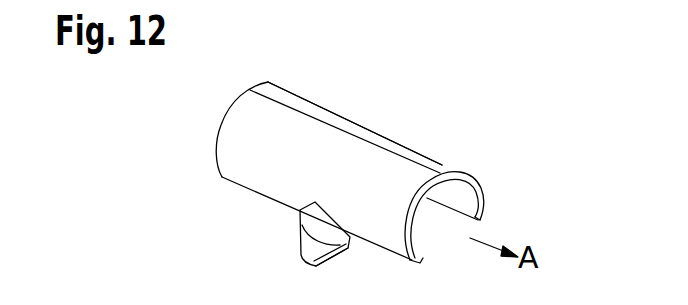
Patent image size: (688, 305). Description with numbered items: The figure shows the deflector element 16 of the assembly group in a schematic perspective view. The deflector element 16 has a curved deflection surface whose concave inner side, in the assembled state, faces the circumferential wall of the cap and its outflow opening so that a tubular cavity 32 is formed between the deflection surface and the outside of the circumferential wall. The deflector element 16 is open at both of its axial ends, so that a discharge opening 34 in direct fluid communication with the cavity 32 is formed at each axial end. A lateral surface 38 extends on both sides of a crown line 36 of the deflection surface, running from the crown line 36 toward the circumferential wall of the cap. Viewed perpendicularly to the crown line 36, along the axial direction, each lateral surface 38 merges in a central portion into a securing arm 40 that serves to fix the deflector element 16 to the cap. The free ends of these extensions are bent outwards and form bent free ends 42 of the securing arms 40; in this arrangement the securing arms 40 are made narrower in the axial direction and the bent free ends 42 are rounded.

The deflector element 16 is at (447, 147).
The tubular cavity 32 is at (462, 227).
The discharge opening 34 is at (222, 125).
The crown line 36 is at (335, 127).
The lateral surface 38 is at (272, 157).
The securing arm 40 is at (313, 217).
The bent free end 42 is at (312, 252).